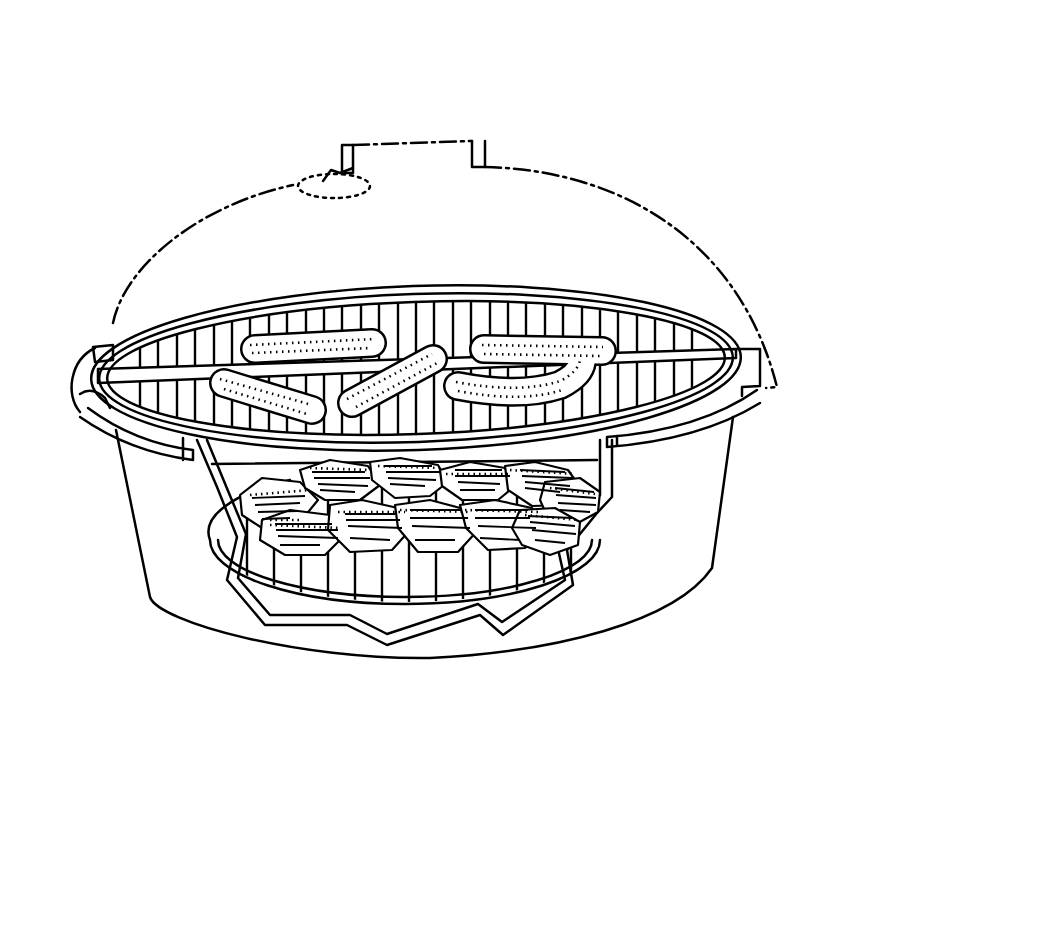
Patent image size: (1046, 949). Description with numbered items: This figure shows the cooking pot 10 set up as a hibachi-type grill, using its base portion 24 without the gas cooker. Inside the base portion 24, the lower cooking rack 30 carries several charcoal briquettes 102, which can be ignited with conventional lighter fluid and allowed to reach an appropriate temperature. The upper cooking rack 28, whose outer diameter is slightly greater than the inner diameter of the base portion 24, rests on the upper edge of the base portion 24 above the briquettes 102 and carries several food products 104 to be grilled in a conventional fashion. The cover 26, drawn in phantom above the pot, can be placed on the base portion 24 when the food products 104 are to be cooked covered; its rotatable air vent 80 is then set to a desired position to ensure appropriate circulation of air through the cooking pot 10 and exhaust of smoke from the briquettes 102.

The cooking pot 10 is at (800, 207).
The base portion 24 is at (727, 500).
The cover 26 is at (660, 220).
The upper cooking rack 28 is at (737, 350).
The lower cooking rack 30 is at (418, 615).
The air vent 80 is at (325, 185).
The charcoal briquettes 102 is at (583, 520).
The food products 104 is at (517, 348).